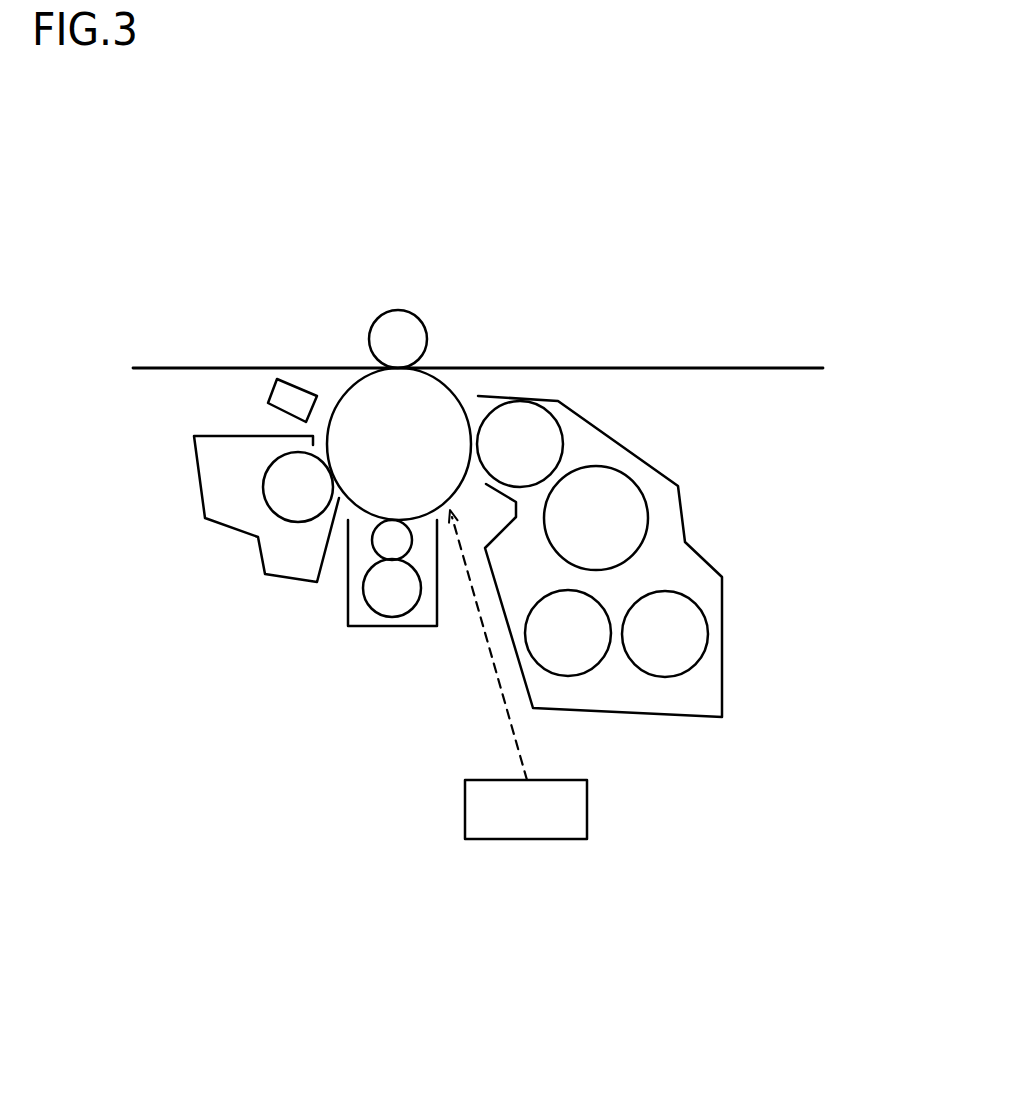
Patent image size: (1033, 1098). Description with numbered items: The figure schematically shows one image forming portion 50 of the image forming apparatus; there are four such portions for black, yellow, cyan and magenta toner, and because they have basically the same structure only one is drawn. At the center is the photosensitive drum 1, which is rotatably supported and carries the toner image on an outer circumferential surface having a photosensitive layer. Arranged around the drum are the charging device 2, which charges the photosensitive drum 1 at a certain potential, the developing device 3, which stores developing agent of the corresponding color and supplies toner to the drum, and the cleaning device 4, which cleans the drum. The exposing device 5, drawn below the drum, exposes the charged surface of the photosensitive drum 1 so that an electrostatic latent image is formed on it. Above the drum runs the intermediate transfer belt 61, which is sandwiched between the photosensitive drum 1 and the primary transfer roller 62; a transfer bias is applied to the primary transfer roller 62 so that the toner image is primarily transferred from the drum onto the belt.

The photosensitive drum 1 is at (343, 390).
The charging device 2 is at (392, 626).
The developing device 3 is at (722, 610).
The cleaning device 4 is at (287, 582).
The exposing device 5 is at (587, 815).
The image forming portion 50 is at (320, 657).
The intermediate transfer belt 61 is at (800, 368).
The primary transfer roller 62 is at (398, 309).